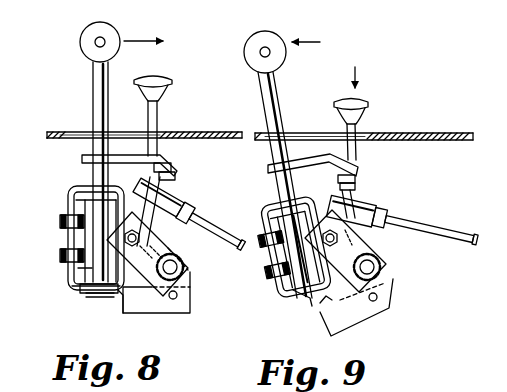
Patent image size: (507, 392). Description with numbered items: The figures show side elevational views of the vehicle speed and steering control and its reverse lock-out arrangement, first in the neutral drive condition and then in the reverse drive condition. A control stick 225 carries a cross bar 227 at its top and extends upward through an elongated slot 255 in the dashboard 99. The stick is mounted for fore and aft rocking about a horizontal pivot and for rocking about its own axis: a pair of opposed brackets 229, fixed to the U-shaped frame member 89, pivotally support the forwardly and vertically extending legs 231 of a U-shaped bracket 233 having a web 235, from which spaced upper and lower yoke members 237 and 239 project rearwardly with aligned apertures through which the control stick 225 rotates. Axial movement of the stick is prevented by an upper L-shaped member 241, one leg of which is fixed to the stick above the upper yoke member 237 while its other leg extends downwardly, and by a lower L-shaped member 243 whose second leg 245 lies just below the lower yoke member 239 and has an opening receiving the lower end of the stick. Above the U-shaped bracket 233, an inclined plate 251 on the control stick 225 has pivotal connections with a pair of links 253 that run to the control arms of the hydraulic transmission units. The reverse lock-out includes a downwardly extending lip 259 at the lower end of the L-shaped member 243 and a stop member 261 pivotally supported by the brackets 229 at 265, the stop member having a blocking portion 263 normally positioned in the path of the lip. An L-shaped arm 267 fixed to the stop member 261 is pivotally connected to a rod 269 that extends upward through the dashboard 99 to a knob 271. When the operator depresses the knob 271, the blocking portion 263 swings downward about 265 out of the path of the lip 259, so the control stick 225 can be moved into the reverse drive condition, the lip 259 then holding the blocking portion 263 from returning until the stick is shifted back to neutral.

In FIG. 8, the U-shaped member 89 is at (184, 261).
In FIG. 9, the U-shaped member 89 is at (383, 265).
In FIG. 8, the dashboard 99 is at (220, 133).
In FIG. 9, the dashboard 99 is at (440, 138).
In FIG. 8, the control stick 225 is at (100, 90).
In FIG. 9, the control stick 225 is at (270, 88).
In FIG. 8, the cross bar 227 is at (90, 33).
In FIG. 9, the cross bar 227 is at (281, 55).
In FIG. 8, the brackets 229 is at (189, 287).
In FIG. 9, the brackets 229 is at (362, 244).
In FIG. 8, the legs 231 is at (76, 287).
In FIG. 8, the U-shaped bracket 233 is at (124, 194).
In FIG. 9, the U-shaped bracket 233 is at (346, 182).
In FIG. 8, the web 235 is at (77, 210).
In FIG. 9, the web 235 is at (273, 203).
In FIG. 8, the upper yoke member 237 is at (88, 197).
In FIG. 8, the lower yoke member 239 is at (90, 294).
In FIG. 8, the upper L-shaped member 241 is at (72, 197).
In FIG. 8, the lower L-shaped member 243 is at (80, 268).
In FIG. 8, the second leg 245 is at (88, 292).
In FIG. 8, the plate 251 is at (118, 157).
In FIG. 9, the plate 251 is at (308, 164).
In FIG. 8, the links 253 is at (203, 222).
In FIG. 9, the links 253 is at (480, 231).
In FIG. 8, the elongated slot 255 is at (161, 131).
In FIG. 9, the elongated slot 255 is at (365, 137).
In FIG. 8, the lip 259 is at (130, 300).
In FIG. 9, the lip 259 is at (320, 303).
In FIG. 8, the stop member 261 is at (162, 307).
In FIG. 9, the stop member 261 is at (358, 315).
In FIG. 9, the blocking portion 263 is at (327, 312).
In FIG. 8, the pivotal support 265 is at (190, 297).
In FIG. 9, the pivotal support 265 is at (378, 297).
In FIG. 8, the L-shaped arm 267 is at (160, 243).
In FIG. 8, the rod 269 is at (158, 118).
In FIG. 9, the rod 269 is at (356, 182).
In FIG. 8, the knob 271 is at (165, 66).
In FIG. 9, the knob 271 is at (363, 107).